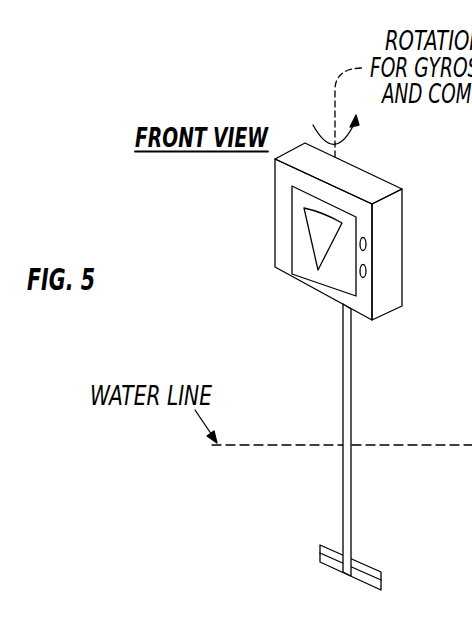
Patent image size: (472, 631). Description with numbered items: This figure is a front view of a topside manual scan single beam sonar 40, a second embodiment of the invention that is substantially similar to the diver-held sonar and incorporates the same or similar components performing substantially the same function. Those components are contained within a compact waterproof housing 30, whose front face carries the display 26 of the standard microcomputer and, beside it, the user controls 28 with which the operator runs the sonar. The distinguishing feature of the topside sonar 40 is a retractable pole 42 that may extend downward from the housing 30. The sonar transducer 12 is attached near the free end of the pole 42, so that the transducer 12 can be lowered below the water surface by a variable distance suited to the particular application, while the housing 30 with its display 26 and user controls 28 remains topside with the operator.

The topside manual scan single beam sonar 40 is at (256, 100).
The compact waterproof housing 30 is at (371, 231).
The display 26 is at (303, 258).
The user controls 28 is at (416, 303).
The retractable pole 42 is at (453, 424).
The transducer 12 is at (452, 567).